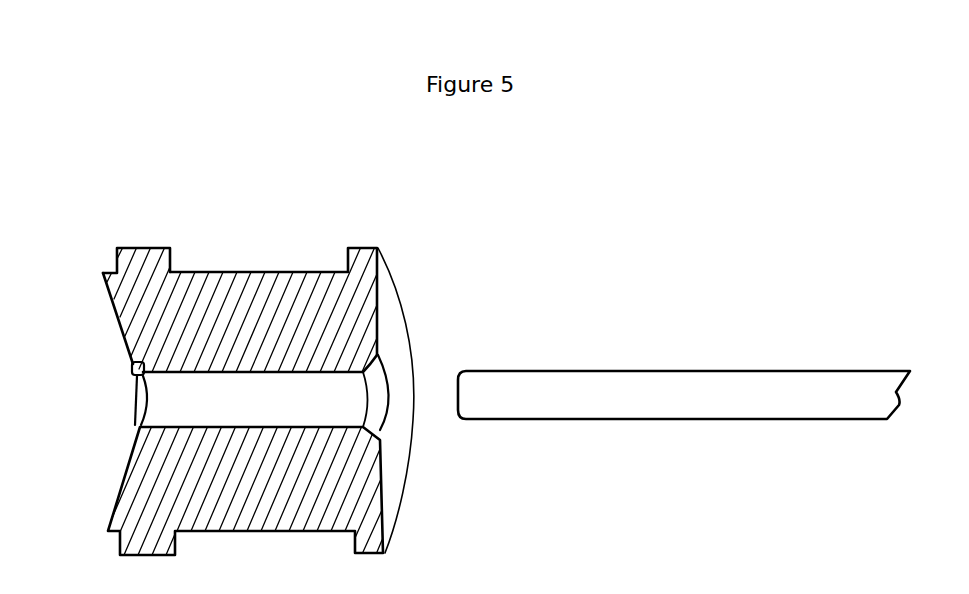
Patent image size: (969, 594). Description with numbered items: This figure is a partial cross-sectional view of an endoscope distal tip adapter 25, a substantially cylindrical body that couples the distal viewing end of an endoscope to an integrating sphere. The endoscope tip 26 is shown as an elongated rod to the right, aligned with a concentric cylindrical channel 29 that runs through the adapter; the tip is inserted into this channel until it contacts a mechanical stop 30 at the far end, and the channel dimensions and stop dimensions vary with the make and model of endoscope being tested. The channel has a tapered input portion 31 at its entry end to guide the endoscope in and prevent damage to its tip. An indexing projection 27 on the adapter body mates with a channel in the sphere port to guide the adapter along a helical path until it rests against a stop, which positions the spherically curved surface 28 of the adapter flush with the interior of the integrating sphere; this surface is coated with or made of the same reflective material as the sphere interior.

The endoscope distal tip adapter 25 is at (388, 252).
The endoscope tip 26 is at (598, 372).
The indexing projection 27 is at (150, 248).
The spherically curved surface 28 is at (118, 310).
The concentric cylindrical channel 29 is at (300, 385).
The mechanical stop 30 is at (130, 370).
The tapered input portion 31 is at (385, 430).